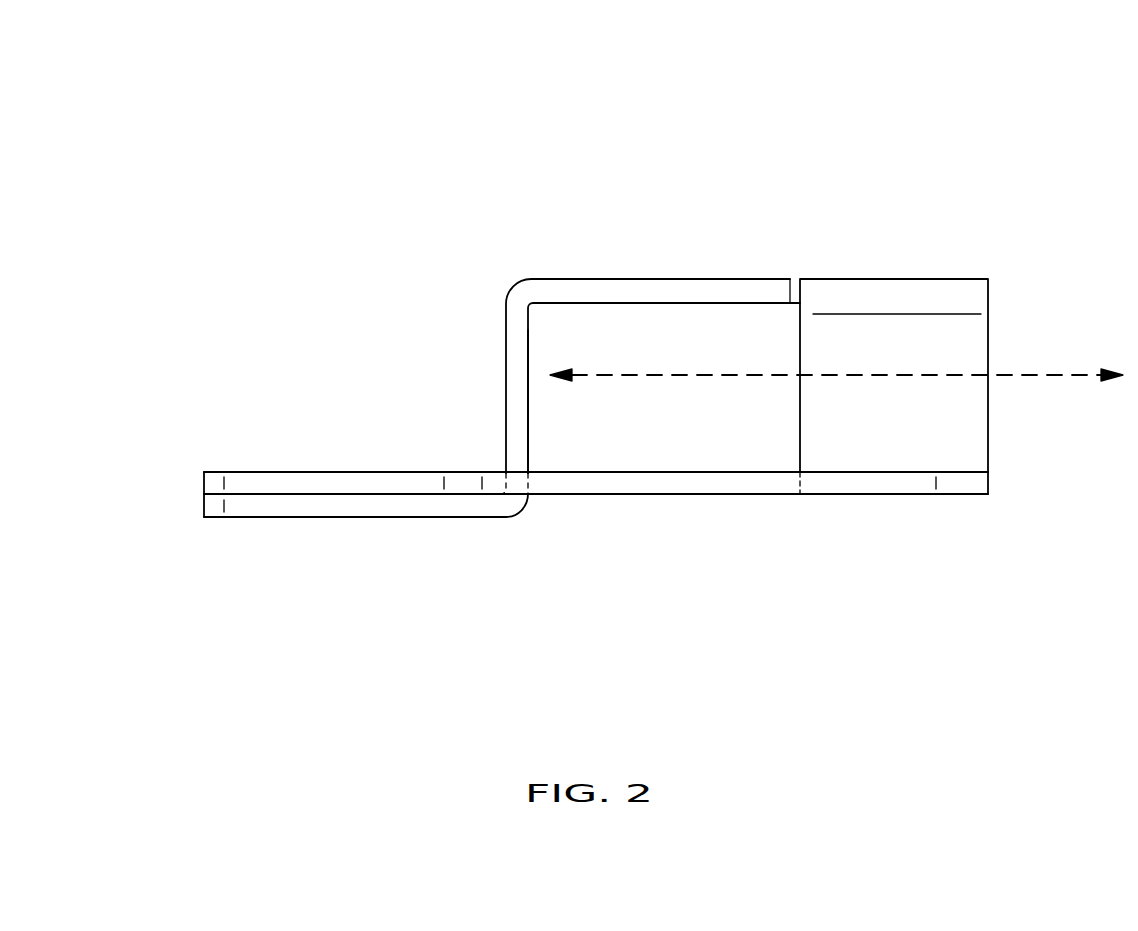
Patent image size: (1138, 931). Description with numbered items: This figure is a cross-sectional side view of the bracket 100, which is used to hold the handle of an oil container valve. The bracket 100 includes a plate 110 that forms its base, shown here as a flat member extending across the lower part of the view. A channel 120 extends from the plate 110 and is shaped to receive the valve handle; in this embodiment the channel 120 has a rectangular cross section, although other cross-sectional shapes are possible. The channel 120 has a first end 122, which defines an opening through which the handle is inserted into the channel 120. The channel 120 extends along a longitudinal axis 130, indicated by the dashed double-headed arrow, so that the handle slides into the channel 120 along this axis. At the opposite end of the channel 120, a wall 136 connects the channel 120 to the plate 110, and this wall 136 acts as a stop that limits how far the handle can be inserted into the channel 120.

The bracket 100 is at (983, 112).
The plate 110 is at (275, 472).
The channel 120 is at (628, 279).
The first end 122 is at (990, 289).
The longitudinal axis 130 is at (1019, 375).
The wall 136 is at (528, 428).